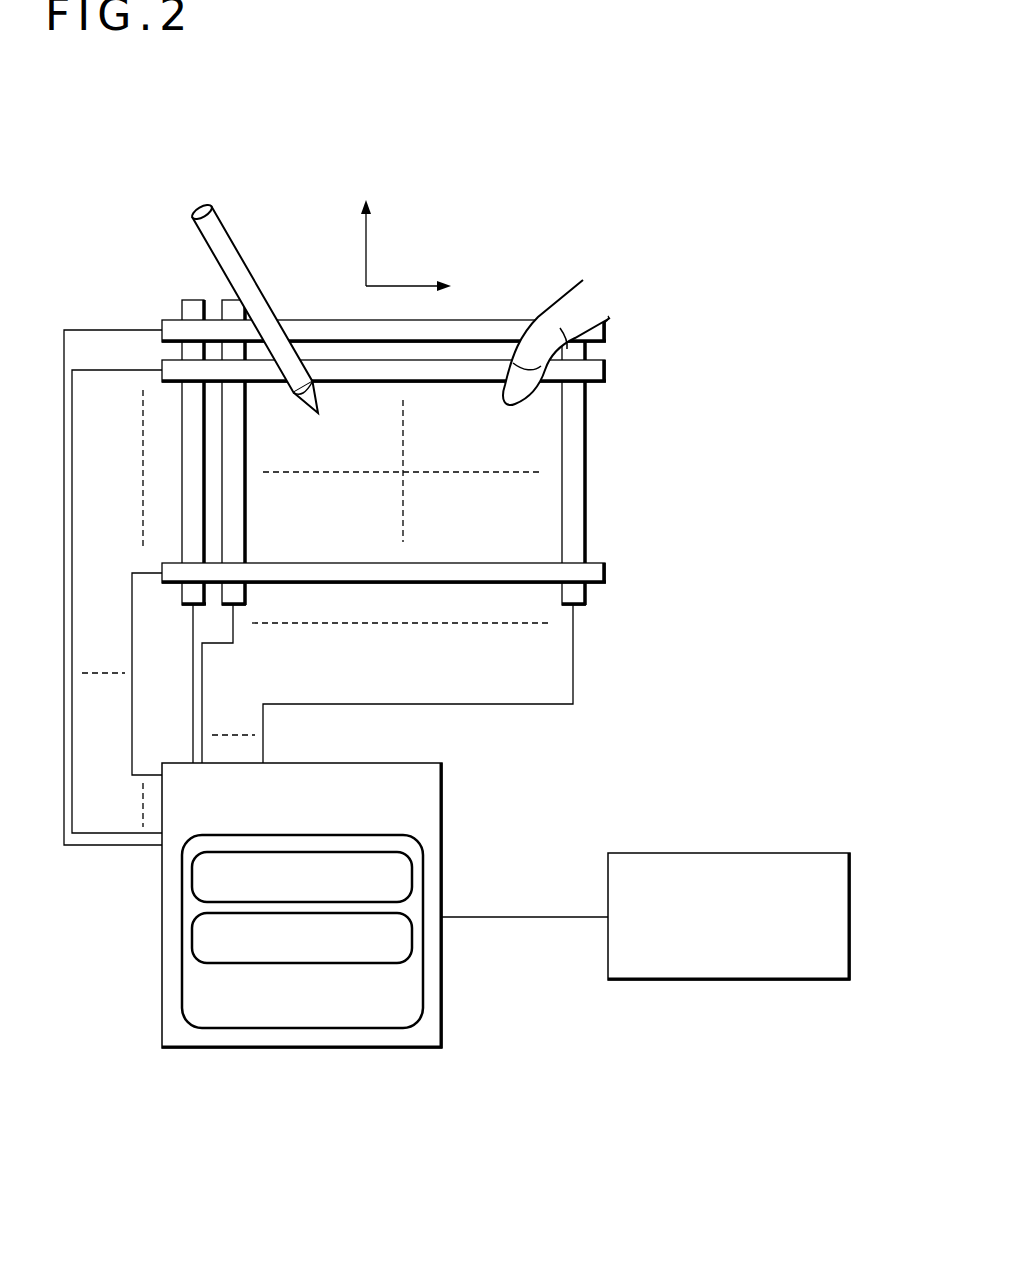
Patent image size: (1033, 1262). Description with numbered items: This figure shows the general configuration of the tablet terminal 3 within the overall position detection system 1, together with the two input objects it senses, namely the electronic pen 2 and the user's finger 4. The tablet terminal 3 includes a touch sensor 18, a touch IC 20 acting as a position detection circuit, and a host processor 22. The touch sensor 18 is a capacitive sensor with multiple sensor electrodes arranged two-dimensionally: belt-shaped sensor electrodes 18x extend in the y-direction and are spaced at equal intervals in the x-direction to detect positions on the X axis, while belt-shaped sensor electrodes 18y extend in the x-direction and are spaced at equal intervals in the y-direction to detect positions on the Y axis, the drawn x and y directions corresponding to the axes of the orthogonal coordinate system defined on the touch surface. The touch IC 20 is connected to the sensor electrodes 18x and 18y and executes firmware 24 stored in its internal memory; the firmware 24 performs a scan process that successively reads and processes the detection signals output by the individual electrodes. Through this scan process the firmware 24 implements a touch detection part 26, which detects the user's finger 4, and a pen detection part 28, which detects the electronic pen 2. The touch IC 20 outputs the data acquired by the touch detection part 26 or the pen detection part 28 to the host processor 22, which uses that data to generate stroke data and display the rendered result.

The position detection system 1 is at (89, 122).
The electronic pen 2 is at (226, 242).
The tablet terminal 3 is at (99, 290).
The user's finger 4 is at (567, 300).
The touch sensor 18 is at (695, 347).
The sensor electrodes 18x is at (574, 409).
The sensor electrodes 18y is at (598, 369).
The touch IC 20 is at (305, 1050).
The host processor 22 is at (730, 852).
The firmware 24 is at (182, 988).
The touch detection part 26 is at (192, 877).
The pen detection part 28 is at (192, 935).